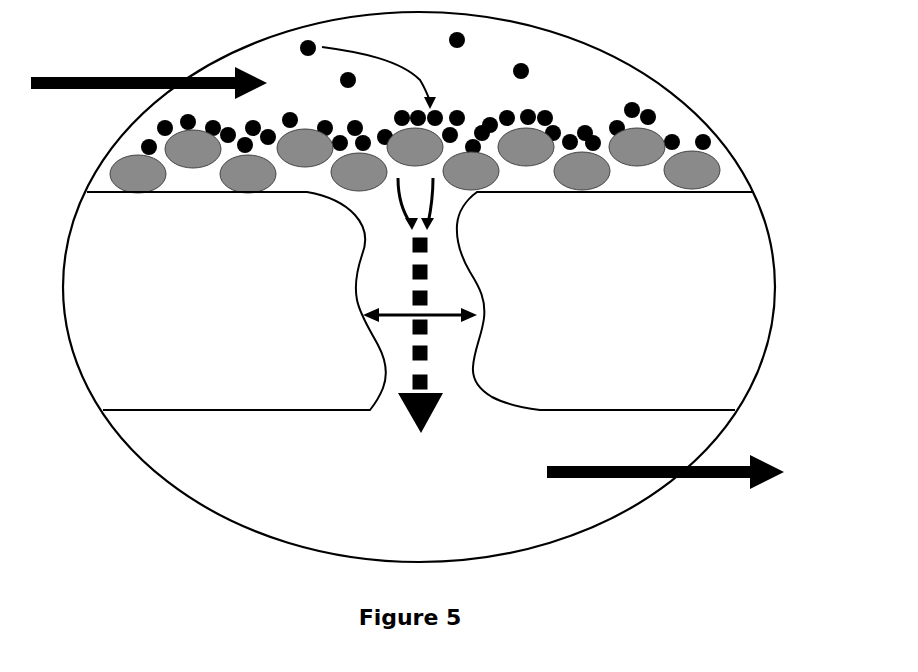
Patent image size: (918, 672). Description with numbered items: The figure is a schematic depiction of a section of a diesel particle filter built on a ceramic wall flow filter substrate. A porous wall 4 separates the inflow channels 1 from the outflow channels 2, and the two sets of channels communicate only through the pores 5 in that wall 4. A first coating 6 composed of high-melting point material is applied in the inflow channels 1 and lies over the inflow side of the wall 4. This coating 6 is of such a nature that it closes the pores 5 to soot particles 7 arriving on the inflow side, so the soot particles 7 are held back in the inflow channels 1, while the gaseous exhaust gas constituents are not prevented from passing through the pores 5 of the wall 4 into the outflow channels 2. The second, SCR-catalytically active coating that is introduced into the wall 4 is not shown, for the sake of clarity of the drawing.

The inflow channels 1 is at (382, 69).
The outflow channels 2 is at (413, 512).
The wall 4 is at (420, 301).
The pores 5 is at (420, 305).
The coating 6 is at (530, 137).
The soot particles 7 is at (528, 67).